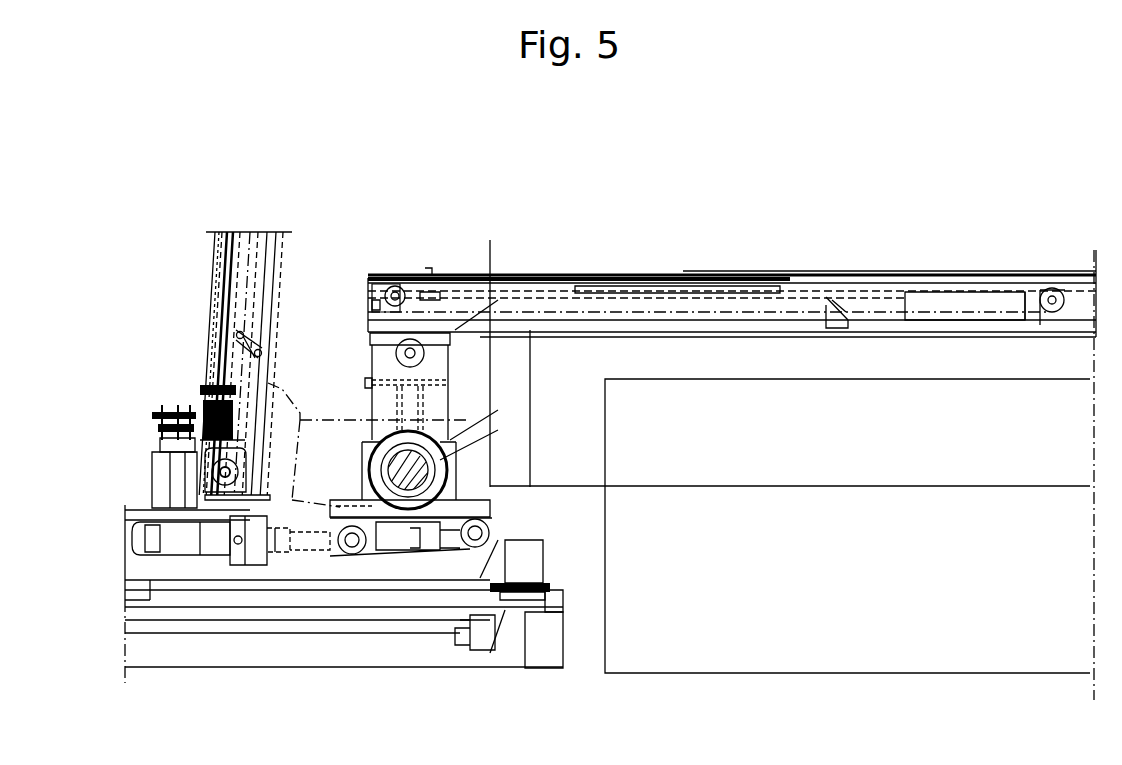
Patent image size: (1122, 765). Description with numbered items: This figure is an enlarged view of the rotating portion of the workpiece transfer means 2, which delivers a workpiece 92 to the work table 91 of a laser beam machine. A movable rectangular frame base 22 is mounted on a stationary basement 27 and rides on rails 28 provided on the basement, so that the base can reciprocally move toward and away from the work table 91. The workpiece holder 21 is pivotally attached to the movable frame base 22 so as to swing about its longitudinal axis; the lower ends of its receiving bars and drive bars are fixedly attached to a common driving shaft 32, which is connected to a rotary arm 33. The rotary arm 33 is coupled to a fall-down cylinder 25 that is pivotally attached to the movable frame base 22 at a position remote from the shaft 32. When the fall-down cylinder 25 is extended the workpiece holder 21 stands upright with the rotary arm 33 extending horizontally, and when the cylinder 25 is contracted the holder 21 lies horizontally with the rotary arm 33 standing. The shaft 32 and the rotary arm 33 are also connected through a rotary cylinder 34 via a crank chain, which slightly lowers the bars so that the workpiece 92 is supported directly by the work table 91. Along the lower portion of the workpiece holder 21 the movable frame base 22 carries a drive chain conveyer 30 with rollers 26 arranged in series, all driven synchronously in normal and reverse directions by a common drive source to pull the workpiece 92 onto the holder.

The workpiece transfer means 2 is at (218, 205).
The workpiece holder 21 is at (237, 249).
The movable rectangular frame base 22 is at (536, 557).
The fall-down cylinder 25 is at (268, 553).
The rollers 26 is at (208, 412).
The stationary basement 27 is at (542, 652).
The rails 28 is at (158, 602).
The drive chain conveyer 30 is at (160, 451).
The common driving shaft 32 is at (385, 280).
The rotary arm 33 is at (765, 351).
The rotary cylinder 34 is at (385, 355).
The work table 91 is at (667, 348).
The workpiece 92 is at (215, 305).